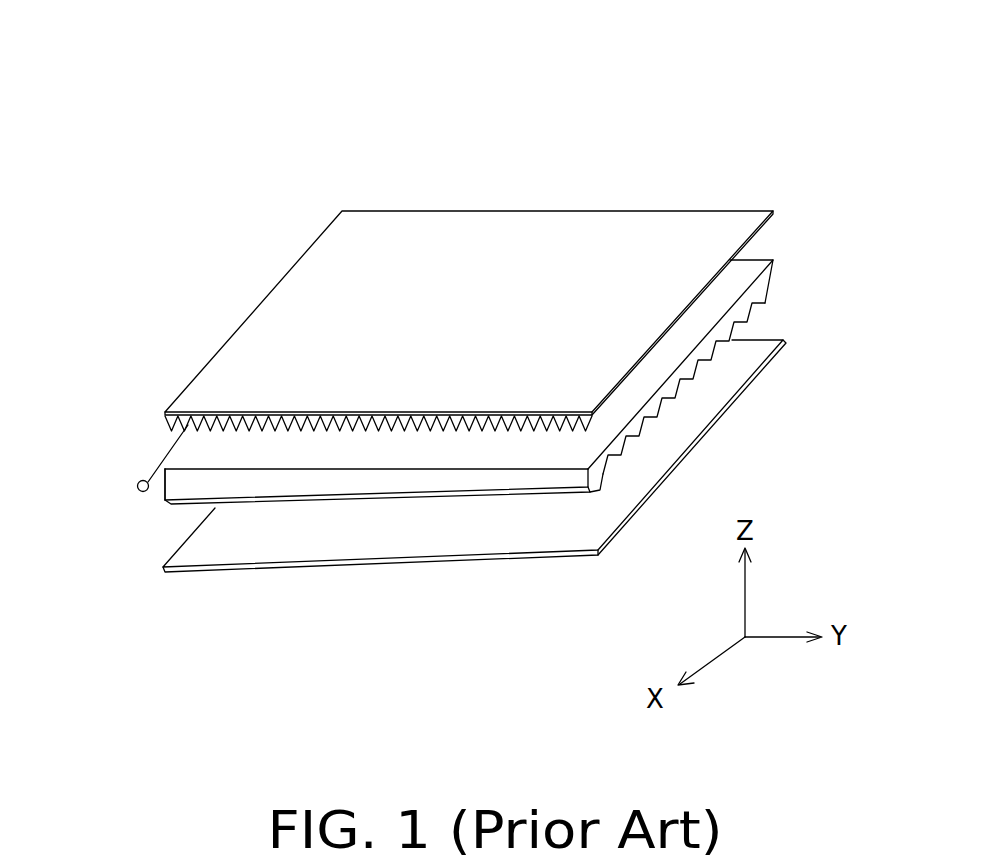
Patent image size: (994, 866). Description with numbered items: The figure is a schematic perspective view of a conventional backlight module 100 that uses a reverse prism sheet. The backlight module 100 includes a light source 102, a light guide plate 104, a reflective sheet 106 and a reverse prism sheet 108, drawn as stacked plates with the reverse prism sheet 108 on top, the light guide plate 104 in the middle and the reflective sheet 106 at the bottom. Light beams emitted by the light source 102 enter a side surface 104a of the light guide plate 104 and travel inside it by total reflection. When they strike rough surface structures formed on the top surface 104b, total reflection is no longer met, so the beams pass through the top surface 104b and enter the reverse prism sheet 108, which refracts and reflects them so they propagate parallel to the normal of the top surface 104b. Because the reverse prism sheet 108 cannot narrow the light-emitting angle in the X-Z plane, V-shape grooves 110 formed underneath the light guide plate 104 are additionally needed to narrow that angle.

The backlight module 100 is at (913, 42).
The light source 102 is at (143, 480).
The light guide plate 104 is at (778, 254).
The side surface 104a is at (155, 493).
The top surface 104b is at (195, 466).
The reflective sheet 106 is at (192, 570).
The reverse prism sheet 108 is at (180, 399).
The V-shape grooves 110 is at (757, 307).